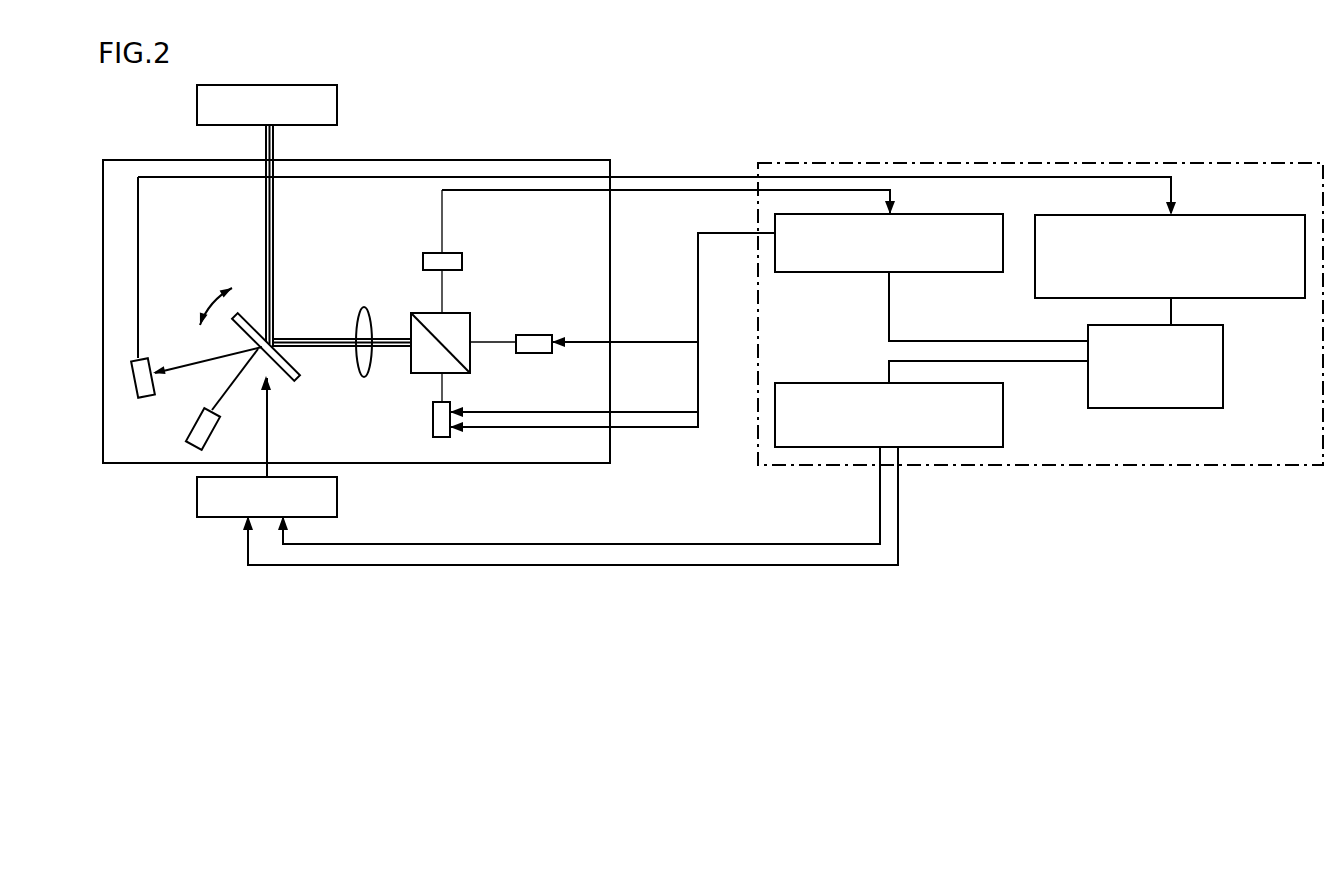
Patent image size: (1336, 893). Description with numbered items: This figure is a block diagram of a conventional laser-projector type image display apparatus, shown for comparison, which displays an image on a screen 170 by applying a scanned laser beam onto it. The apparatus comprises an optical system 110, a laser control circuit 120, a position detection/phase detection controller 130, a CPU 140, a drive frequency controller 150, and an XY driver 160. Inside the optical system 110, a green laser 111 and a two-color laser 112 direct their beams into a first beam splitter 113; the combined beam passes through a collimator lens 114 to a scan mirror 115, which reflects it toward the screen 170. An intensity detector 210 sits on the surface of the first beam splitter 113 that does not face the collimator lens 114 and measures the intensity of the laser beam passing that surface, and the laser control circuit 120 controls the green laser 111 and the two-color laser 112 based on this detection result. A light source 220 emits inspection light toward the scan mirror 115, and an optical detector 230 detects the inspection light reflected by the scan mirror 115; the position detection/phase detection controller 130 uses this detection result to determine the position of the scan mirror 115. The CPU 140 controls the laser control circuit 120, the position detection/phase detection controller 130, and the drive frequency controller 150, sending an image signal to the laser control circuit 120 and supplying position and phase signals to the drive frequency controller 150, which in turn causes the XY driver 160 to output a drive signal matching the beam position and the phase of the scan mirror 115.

The optical system 110 is at (103, 227).
The green laser 111 is at (543, 335).
The two-color laser 112 is at (432, 418).
The first beam splitter 113 is at (452, 312).
The collimator lens 114 is at (356, 322).
The scan mirror 115 is at (297, 377).
The laser control circuit 120 is at (920, 213).
The position detection/phase detection controller 130 is at (1200, 214).
The CPU 140 is at (1165, 408).
The drive frequency controller 150 is at (1003, 428).
The XY driver 160 is at (197, 497).
The screen 170 is at (197, 105).
The intensity detector 210 is at (453, 252).
The light source 220 is at (190, 428).
The optical detector 230 is at (132, 378).